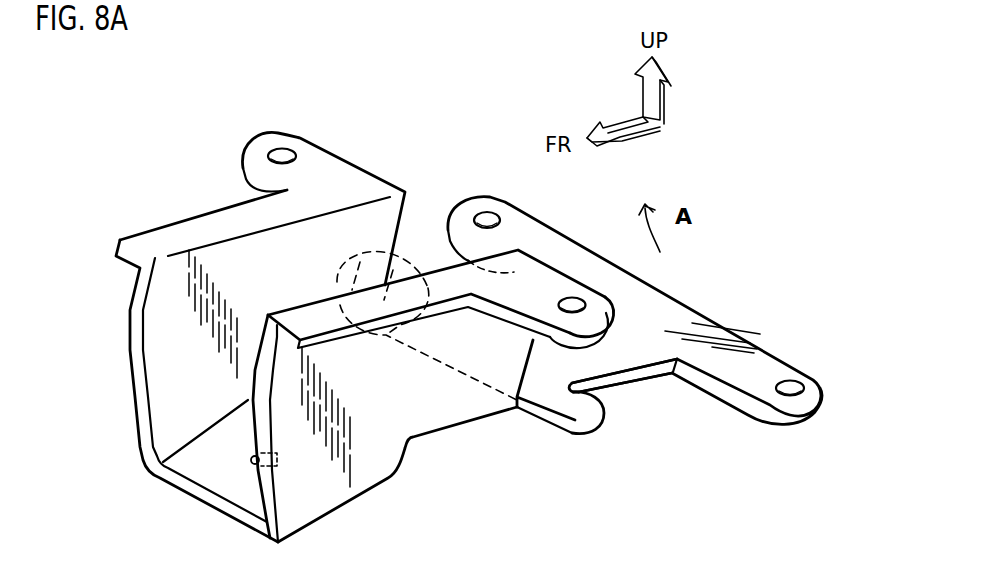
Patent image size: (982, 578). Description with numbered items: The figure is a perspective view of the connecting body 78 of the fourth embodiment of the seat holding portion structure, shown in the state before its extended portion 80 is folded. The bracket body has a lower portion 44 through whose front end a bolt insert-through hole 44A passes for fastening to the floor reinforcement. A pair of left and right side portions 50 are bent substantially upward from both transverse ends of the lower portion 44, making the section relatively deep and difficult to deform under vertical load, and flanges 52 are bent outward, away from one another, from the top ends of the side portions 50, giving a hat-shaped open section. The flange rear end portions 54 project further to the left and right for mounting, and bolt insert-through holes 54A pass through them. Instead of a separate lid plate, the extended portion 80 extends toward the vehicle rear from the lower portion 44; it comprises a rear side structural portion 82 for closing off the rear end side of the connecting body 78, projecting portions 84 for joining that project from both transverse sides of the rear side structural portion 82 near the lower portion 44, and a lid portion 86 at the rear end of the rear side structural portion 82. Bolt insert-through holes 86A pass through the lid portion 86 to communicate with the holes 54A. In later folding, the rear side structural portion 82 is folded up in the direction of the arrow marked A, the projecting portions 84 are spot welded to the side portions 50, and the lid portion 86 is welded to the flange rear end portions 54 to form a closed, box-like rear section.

The lower portion 44 is at (238, 488).
The bolt insert-through hole 44A is at (248, 452).
The side portions 50 is at (178, 432).
The flanges 52 is at (219, 228).
The flange rear end portions 54 is at (370, 178).
The bolt insert-through holes 54A is at (282, 150).
The connecting body 78 is at (508, 138).
The extended portion 80 is at (628, 436).
The rear side structural portion 82 is at (603, 356).
The projecting portions 84 is at (398, 268).
The lid portion 86 is at (683, 313).
The bolt insert-through holes 86A is at (488, 214).